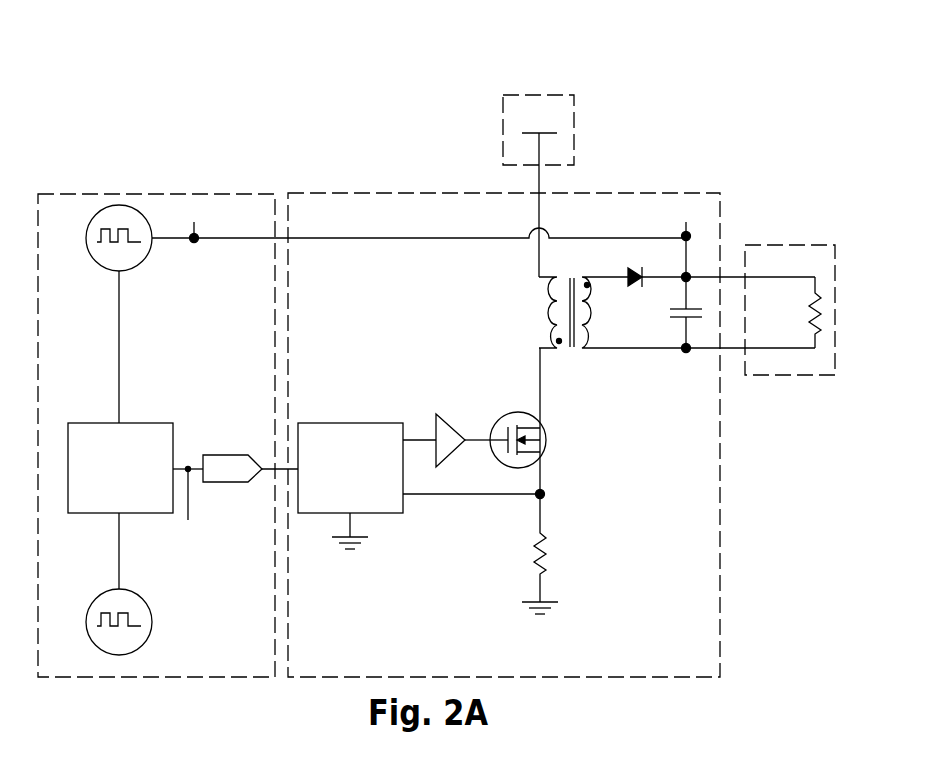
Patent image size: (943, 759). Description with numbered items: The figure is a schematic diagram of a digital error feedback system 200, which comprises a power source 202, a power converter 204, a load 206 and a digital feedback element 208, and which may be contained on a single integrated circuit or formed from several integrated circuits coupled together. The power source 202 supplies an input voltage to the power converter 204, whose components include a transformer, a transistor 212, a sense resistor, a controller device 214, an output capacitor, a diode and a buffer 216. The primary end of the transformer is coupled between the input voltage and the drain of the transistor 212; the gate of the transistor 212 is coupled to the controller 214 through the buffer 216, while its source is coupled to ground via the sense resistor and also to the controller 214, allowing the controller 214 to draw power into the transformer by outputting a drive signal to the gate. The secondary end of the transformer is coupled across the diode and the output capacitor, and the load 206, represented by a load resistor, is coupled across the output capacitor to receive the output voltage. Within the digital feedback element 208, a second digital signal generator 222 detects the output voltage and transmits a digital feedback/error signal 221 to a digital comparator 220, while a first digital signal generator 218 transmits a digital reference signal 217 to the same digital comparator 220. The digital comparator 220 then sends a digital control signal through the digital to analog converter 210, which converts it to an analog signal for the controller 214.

The digital error feedback system 200 is at (746, 80).
The power source 202 is at (550, 95).
The power converter 204 is at (617, 193).
The load 206 is at (787, 245).
The digital feedback element 208 is at (239, 194).
The digital to analog converter 210 is at (240, 455).
The transistor 212 is at (500, 414).
The controller device 214 is at (323, 423).
The buffer 216 is at (449, 414).
The digital reference signal 217 is at (130, 600).
The first digital signal generator 218 is at (96, 598).
The digital comparator 220 is at (154, 423).
The digital feedback/error signal 221 is at (132, 231).
The second digital signal generator 222 is at (94, 263).